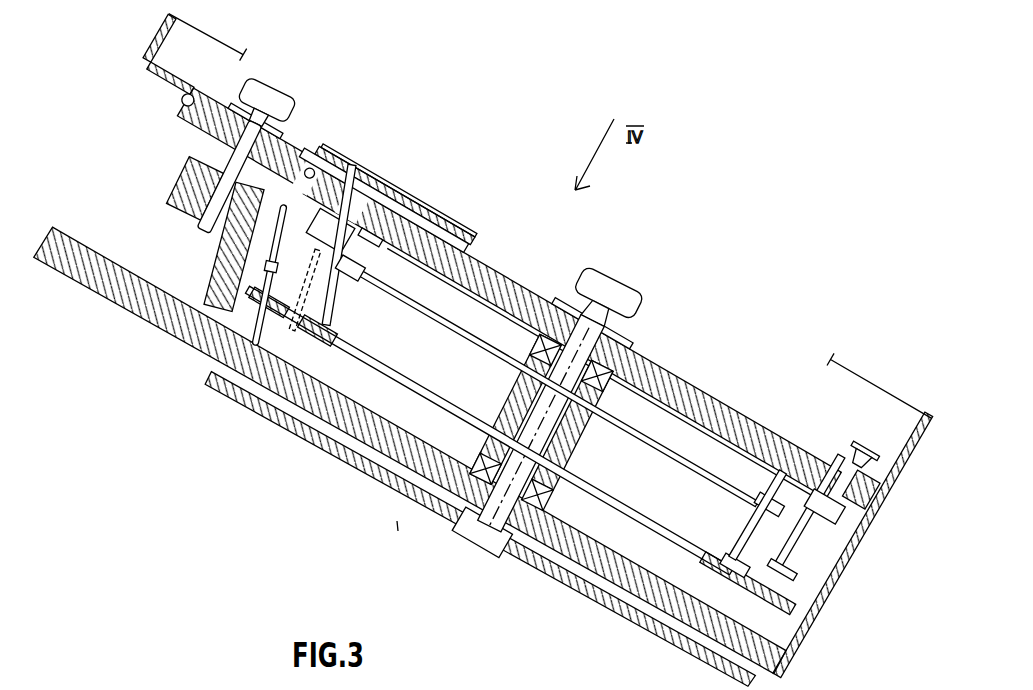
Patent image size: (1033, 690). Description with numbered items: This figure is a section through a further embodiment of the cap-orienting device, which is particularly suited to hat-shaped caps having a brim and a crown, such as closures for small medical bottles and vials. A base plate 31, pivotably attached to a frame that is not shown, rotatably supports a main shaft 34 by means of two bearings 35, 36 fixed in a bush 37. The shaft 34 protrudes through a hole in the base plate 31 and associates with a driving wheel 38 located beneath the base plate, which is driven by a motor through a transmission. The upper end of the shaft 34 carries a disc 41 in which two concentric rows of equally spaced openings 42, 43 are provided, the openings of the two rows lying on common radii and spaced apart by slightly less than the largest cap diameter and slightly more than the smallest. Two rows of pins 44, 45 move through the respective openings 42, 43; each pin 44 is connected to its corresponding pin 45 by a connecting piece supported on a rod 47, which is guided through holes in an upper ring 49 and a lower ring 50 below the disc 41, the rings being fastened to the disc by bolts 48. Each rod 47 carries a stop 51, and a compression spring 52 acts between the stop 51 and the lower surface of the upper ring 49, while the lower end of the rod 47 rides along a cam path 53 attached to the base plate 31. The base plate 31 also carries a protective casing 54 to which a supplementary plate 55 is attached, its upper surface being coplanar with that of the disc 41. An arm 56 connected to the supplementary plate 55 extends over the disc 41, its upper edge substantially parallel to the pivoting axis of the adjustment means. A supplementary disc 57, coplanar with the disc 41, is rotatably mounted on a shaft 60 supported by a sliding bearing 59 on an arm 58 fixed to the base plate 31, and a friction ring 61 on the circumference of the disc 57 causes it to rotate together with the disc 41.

The base plate 31 is at (584, 600).
The main shaft 34 is at (537, 450).
The bearing 35 is at (606, 403).
The bearing 36 is at (547, 504).
The bush 37 is at (589, 437).
The driving wheel 38 is at (552, 573).
The disc 41 is at (493, 253).
The row of openings 42 is at (387, 184).
The row of openings 43 is at (330, 172).
The pin 44 is at (363, 250).
The pin 45 is at (317, 213).
The rod 47 is at (297, 265).
The bolt 48 is at (376, 270).
The upper ring 49 is at (364, 287).
The lower ring 50 is at (333, 341).
The stop 51 is at (273, 292).
The compression spring 52 is at (303, 284).
The cam path 53 is at (372, 372).
The protective casing 54 is at (162, 48).
The supplementary plate 55 is at (165, 78).
The arm 56 is at (422, 197).
The supplementary disc 57 is at (300, 142).
The arm 58 is at (205, 271).
The sliding bearing 59 is at (182, 193).
The shaft 60 is at (197, 228).
The friction ring 61 is at (181, 100).